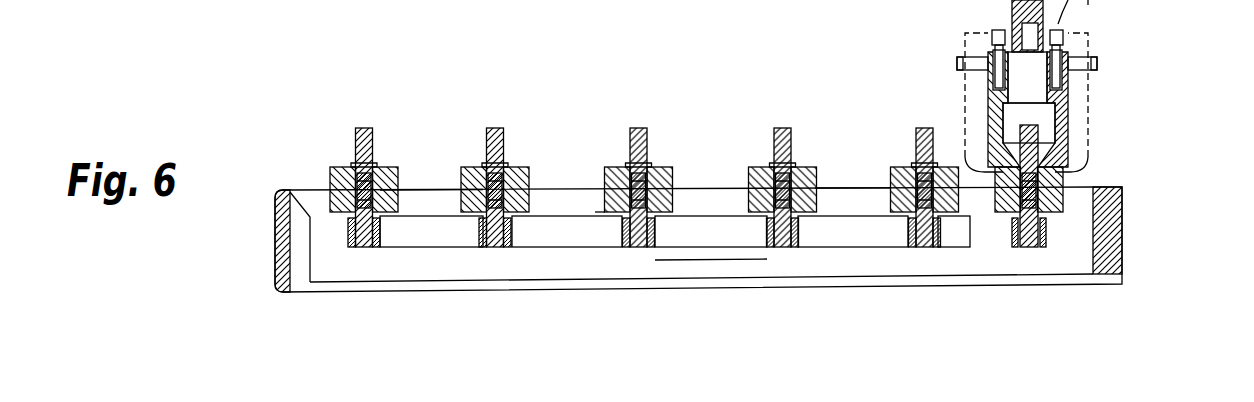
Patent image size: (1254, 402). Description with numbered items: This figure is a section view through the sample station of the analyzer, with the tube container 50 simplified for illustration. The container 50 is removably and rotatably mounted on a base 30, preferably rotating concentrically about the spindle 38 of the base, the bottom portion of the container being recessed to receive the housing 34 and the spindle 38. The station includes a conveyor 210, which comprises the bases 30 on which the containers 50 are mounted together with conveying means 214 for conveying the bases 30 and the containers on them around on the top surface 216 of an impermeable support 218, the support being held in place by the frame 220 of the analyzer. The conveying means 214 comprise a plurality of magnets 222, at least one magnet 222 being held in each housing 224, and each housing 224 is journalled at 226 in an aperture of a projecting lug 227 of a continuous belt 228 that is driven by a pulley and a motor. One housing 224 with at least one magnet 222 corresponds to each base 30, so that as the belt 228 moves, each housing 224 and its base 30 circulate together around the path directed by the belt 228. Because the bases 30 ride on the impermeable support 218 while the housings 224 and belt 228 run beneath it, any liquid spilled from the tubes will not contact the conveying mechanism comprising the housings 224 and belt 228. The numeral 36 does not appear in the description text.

The conveyor 210 is at (142, 0).
The frame 220 is at (276, 249).
The conveying means 214 is at (413, 271).
The top surface 216 is at (843, 189).
The impermeable support 218 is at (425, 188).
The base 30 is at (336, 146).
The housing 34 is at (661, 170).
The cam block 36 is at (514, 176).
The spindle 38 is at (788, 128).
The magnet 222 is at (596, 212).
The housing 224 is at (400, 206).
The journal 226 is at (362, 251).
The projecting lug 227 is at (765, 224).
The continuous belt 228 is at (720, 232).
The container 50 is at (1098, 65).